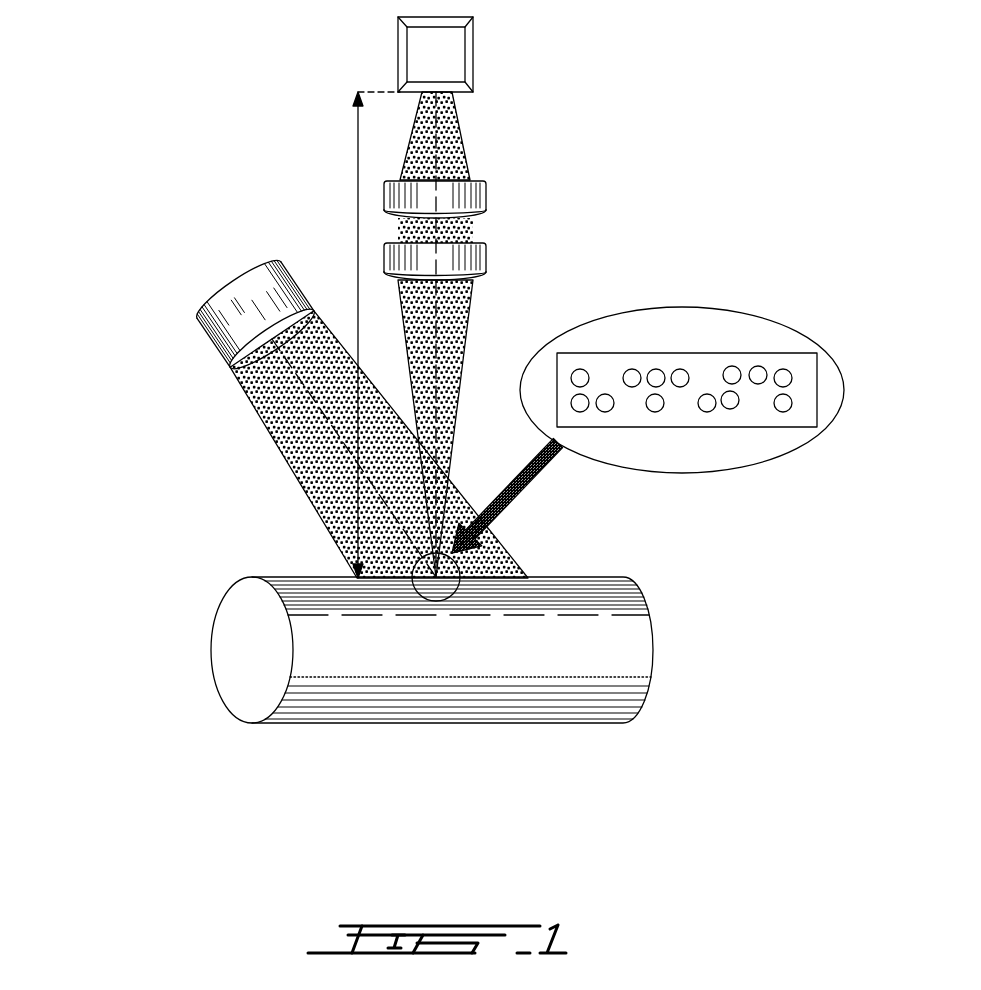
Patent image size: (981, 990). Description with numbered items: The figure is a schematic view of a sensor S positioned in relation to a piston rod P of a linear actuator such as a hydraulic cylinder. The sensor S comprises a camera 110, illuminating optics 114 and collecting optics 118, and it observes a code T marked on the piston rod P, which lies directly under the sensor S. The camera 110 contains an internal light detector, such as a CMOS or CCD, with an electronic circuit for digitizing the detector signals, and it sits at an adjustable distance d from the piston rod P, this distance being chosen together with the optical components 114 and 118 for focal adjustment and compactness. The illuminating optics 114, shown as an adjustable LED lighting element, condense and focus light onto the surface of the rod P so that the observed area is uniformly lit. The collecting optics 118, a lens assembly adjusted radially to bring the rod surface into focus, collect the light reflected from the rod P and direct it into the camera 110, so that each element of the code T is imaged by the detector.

The camera 110 is at (500, 43).
The illuminating optics 114 is at (172, 285).
The collecting optics 118 is at (522, 213).
The sensor S is at (222, 182).
The piston rod P is at (212, 742).
The code T is at (822, 320).